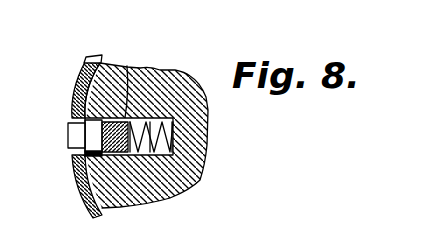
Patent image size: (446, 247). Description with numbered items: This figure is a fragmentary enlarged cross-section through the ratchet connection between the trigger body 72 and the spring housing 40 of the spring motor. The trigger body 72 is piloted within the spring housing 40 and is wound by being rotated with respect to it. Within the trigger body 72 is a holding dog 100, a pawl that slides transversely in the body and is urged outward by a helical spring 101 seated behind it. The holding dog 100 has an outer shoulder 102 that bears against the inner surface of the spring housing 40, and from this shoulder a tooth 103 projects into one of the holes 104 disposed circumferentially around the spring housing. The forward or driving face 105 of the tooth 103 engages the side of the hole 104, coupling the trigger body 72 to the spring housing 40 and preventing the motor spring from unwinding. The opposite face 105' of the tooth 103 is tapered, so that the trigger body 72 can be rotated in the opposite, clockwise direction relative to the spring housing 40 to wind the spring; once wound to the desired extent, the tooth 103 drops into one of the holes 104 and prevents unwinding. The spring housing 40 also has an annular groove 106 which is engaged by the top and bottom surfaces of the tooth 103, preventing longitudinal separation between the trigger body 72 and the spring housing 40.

The spring housing 40 is at (92, 57).
The trigger body 72 is at (192, 170).
The holding dog 100 is at (127, 66).
The helical spring 101 is at (173, 130).
The outer shoulder 102 is at (72, 102).
The tooth 103 is at (75, 150).
The holes 104 is at (78, 138).
The driving face 105 is at (67, 186).
The opposite face 105' is at (51, 127).
The annular groove 106 is at (80, 77).